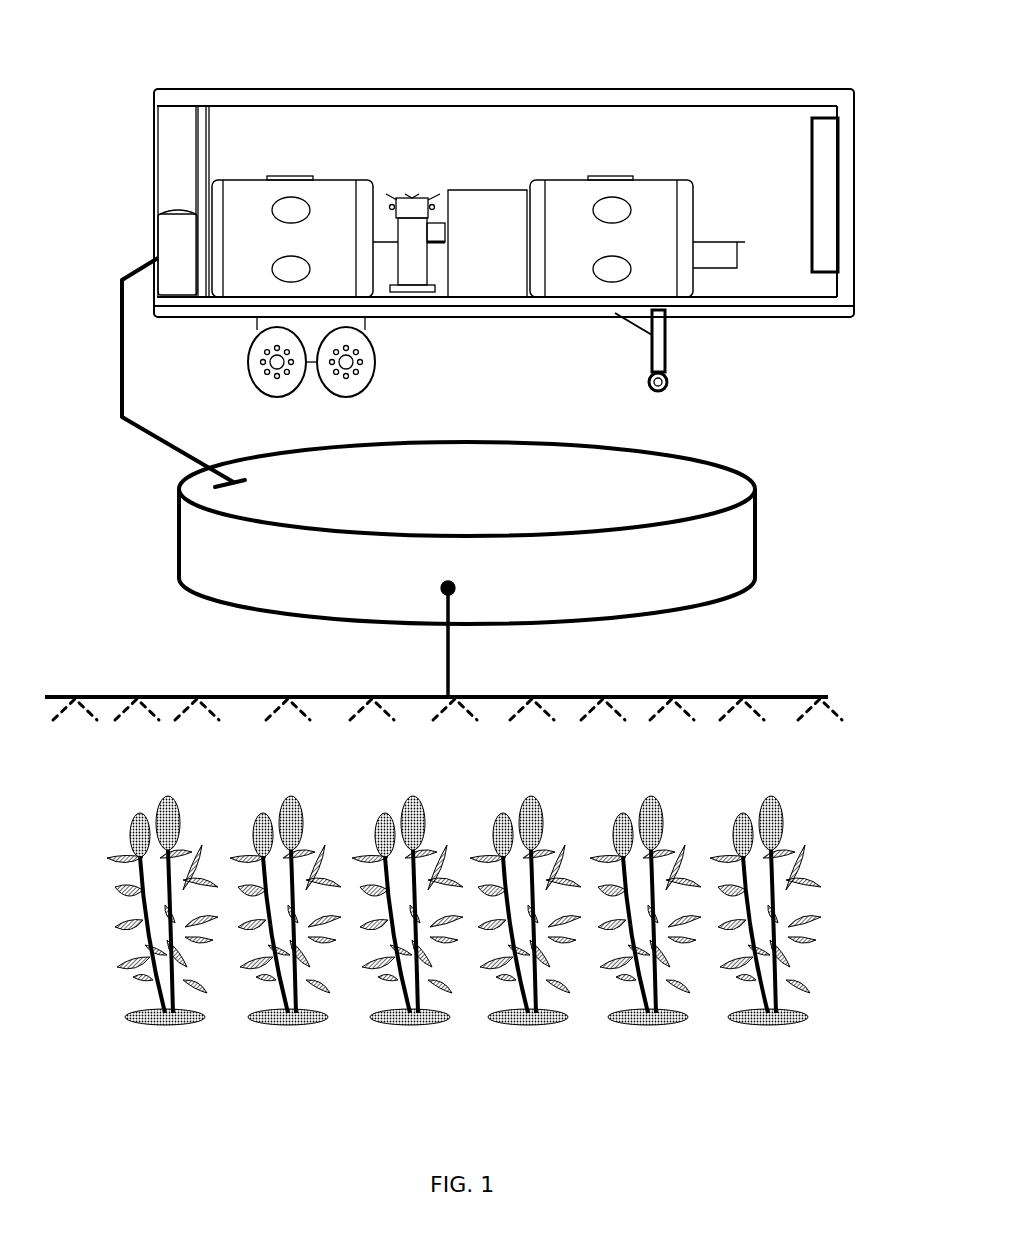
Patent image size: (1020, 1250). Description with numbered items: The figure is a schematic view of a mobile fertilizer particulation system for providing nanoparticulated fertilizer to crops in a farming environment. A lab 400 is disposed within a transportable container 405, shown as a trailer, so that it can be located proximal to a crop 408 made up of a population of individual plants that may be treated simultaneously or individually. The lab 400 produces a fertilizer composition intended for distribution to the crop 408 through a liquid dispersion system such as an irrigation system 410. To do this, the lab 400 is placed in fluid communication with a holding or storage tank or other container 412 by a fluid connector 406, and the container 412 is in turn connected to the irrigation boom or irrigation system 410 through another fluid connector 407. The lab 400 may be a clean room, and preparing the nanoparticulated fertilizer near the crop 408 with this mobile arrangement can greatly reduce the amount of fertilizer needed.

The lab 400 is at (498, 115).
The transportable container 405 is at (285, 90).
The fluid connector 406 is at (133, 274).
The fluid connector 407 is at (446, 672).
The crop 408 is at (523, 822).
The irrigation system 410 is at (748, 697).
The storage tank 412 is at (675, 503).